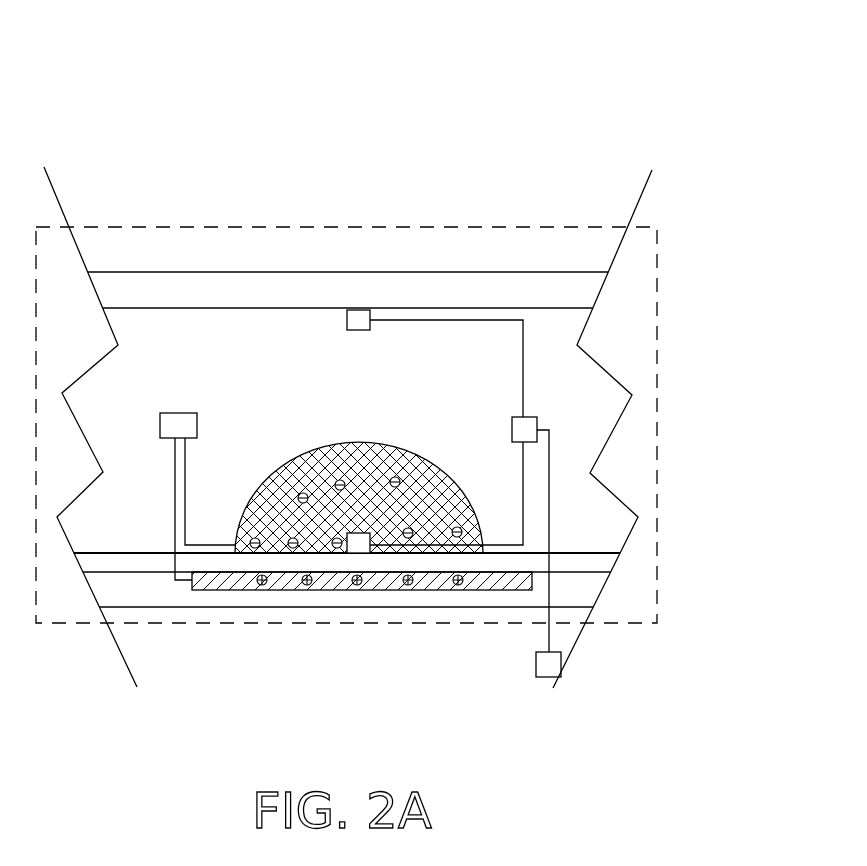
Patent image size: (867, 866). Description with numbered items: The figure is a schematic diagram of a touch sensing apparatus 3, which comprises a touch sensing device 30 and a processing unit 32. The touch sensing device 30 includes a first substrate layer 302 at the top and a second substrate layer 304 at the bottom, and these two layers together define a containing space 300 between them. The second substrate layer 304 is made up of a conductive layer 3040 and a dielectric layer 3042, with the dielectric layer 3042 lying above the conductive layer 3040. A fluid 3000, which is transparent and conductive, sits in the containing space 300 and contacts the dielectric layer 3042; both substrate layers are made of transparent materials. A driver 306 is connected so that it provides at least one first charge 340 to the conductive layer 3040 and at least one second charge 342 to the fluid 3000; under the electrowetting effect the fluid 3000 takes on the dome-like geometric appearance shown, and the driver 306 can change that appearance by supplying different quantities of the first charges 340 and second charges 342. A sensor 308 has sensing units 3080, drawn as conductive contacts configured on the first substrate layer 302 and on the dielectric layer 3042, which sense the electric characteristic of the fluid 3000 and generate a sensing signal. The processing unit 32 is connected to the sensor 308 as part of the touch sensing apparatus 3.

The touch sensing apparatus 3 is at (190, 94).
The touch sensing device 30 is at (332, 227).
The containing space 300 is at (207, 353).
The first substrate layer 302 is at (453, 272).
The second substrate layer 304 is at (352, 608).
The conductive layer 3040 is at (243, 582).
The dielectric layer 3042 is at (158, 563).
The driver 306 is at (160, 413).
The sensor 308 is at (537, 415).
The sensing units 3080 is at (370, 330).
The fluid 3000 is at (302, 456).
The second charge 342 is at (303, 498).
The first charge 340 is at (458, 583).
The processing unit 32 is at (537, 680).